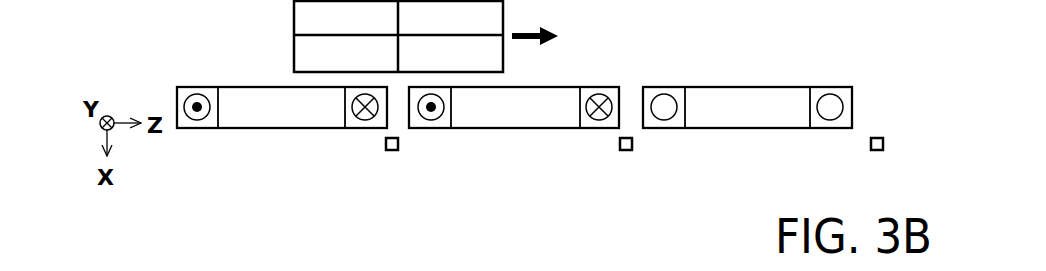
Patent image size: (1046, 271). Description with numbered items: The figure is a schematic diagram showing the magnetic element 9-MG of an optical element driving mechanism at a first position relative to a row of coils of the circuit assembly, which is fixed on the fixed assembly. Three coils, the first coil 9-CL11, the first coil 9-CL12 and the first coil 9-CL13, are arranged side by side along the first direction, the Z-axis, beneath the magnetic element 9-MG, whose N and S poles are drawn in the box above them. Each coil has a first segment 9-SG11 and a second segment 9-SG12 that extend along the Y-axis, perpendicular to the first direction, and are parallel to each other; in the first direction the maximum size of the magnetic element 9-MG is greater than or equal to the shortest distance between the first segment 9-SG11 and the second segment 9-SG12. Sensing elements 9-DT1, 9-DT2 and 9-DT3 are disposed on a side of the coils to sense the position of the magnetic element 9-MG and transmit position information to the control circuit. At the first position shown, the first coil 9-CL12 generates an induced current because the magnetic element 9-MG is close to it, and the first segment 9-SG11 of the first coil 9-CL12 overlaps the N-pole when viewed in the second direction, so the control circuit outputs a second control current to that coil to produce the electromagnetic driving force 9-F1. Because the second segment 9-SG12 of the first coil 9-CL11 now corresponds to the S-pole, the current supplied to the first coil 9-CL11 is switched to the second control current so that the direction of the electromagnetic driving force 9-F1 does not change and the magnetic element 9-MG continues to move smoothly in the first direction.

The magnetic element 9-MG is at (291, 14).
The electromagnetic driving force 9-F1 is at (556, 35).
The first coil 9-CL11 is at (282, 147).
The first coil 9-CL12 is at (543, 110).
The first coil 9-CL13 is at (801, 86).
The first segment 9-SG11 is at (432, 130).
The second segment 9-SG12 is at (351, 130).
The sensing element 9-DT1 is at (400, 150).
The sensing element 9-DT2 is at (621, 150).
The sensing element 9-DT3 is at (871, 149).